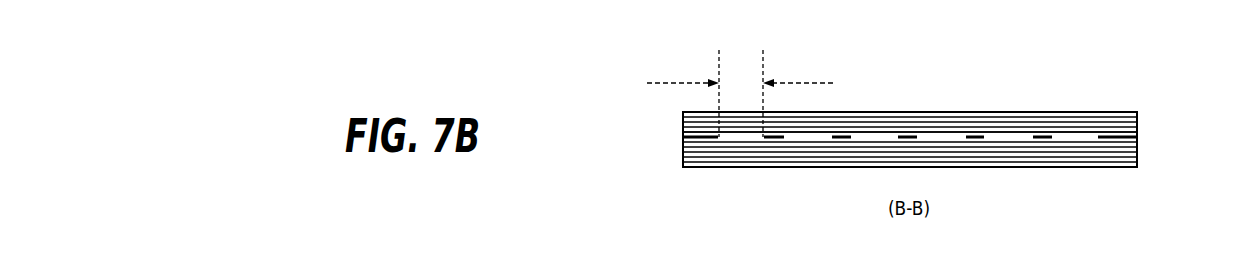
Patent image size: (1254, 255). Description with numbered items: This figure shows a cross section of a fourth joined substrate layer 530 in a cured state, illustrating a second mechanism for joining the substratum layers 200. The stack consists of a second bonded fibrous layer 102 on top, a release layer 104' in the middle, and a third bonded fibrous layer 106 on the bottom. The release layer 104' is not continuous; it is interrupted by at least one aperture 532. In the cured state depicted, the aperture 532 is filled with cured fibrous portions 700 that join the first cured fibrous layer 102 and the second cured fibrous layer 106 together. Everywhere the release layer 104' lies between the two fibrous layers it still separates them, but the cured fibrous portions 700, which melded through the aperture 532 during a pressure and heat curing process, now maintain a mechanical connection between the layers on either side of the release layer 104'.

The joined substratum layers 200 is at (642, 172).
The second bonded fibrous layer 102 is at (1133, 124).
The release layer 104' is at (948, 130).
The third bonded fibrous layer 106 is at (1133, 164).
The cured fibrous portions 700 is at (747, 138).
The fourth joined substrate layer 530 is at (658, 58).
The aperture 532 is at (740, 83).